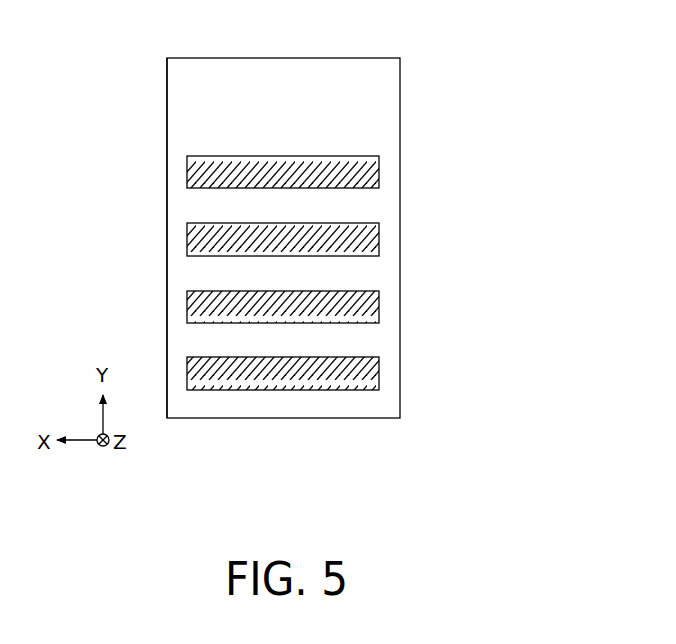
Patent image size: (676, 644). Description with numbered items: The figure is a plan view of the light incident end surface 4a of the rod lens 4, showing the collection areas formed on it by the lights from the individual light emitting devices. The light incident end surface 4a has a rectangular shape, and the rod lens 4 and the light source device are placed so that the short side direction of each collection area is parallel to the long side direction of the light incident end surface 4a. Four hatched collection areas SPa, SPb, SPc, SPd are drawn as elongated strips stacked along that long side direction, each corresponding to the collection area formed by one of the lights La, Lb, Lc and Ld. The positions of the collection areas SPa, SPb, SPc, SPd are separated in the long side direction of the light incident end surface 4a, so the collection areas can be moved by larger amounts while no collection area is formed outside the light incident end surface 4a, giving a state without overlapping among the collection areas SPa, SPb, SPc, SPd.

The rod lens 4 is at (164, 56).
The light incident end surface 4a is at (176, 114).
The collection area SPa is at (371, 234).
The collection area SPb is at (371, 166).
The collection area SPc is at (371, 302).
The collection area SPd is at (371, 370).